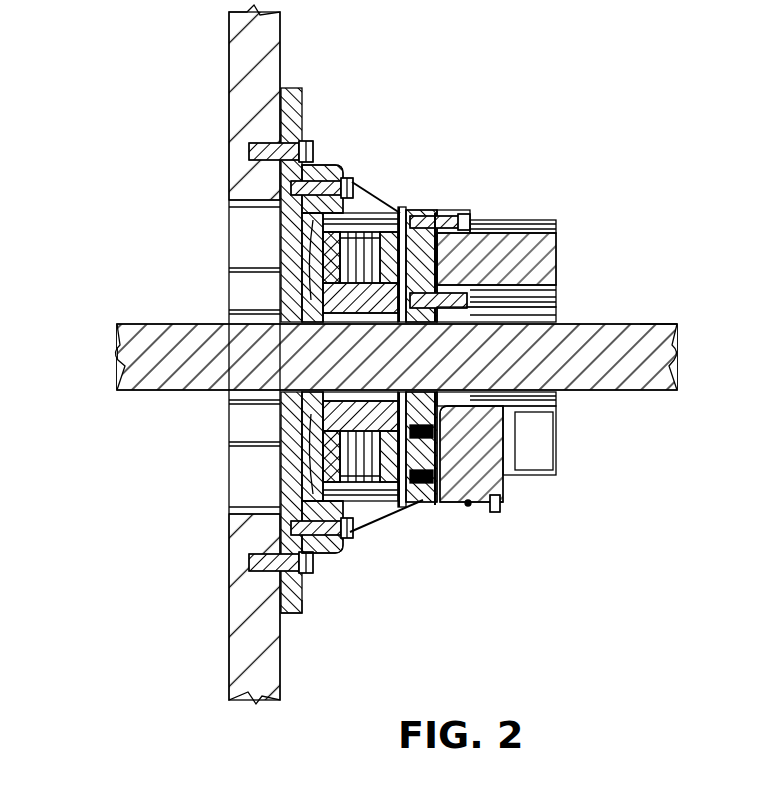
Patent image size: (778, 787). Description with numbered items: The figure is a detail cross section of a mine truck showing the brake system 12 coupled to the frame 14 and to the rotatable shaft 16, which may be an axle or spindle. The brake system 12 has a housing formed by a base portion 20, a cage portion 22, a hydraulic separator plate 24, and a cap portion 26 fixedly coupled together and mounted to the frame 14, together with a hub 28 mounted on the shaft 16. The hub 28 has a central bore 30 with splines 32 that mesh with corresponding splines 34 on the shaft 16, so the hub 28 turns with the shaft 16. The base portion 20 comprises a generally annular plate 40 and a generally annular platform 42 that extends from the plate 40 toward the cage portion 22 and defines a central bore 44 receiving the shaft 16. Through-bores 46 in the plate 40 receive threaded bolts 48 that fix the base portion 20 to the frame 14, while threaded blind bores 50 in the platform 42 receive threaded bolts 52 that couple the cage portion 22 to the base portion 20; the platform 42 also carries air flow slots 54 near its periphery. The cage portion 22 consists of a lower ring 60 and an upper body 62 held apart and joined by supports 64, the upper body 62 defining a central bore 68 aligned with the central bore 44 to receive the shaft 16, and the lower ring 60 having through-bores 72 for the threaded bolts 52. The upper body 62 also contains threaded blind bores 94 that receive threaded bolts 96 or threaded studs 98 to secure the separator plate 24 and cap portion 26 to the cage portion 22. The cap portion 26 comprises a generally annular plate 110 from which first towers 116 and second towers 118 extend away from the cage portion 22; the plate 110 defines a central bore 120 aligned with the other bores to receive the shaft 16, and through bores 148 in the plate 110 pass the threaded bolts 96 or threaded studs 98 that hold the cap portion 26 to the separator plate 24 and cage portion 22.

The brake system 12 is at (518, 100).
The frame 14 is at (237, 53).
The shaft 16 is at (668, 323).
The base portion 20 is at (301, 617).
The cage portion 22 is at (386, 518).
The hydraulic separator plate 24 is at (436, 510).
The cap portion 26 is at (566, 454).
The hub 28 is at (300, 258).
The central bore 30 is at (310, 386).
The splines 32 is at (137, 346).
The splines 34 is at (300, 300).
The plate 40 is at (293, 88).
The platform 42 is at (323, 166).
The central bore 44 is at (300, 421).
The through-bores 46 is at (263, 143).
The threaded bolts 48 is at (308, 141).
The threaded blind bores 50 is at (291, 188).
The threaded bolts 52 is at (356, 185).
The air flow slots 54 is at (300, 214).
The lower ring 60 is at (333, 553).
The upper body 62 is at (402, 207).
The supports 64 is at (362, 503).
The central bore 68 is at (468, 318).
The through-bores 72 is at (263, 556).
The threaded blind bores 94 is at (432, 210).
The threaded bolts 96 is at (470, 292).
The threaded studs 98 is at (470, 212).
The plate 110 is at (450, 210).
The first towers 116 is at (497, 488).
The second towers 118 is at (557, 260).
The central bore 120 is at (470, 400).
The through bores 148 is at (470, 210).